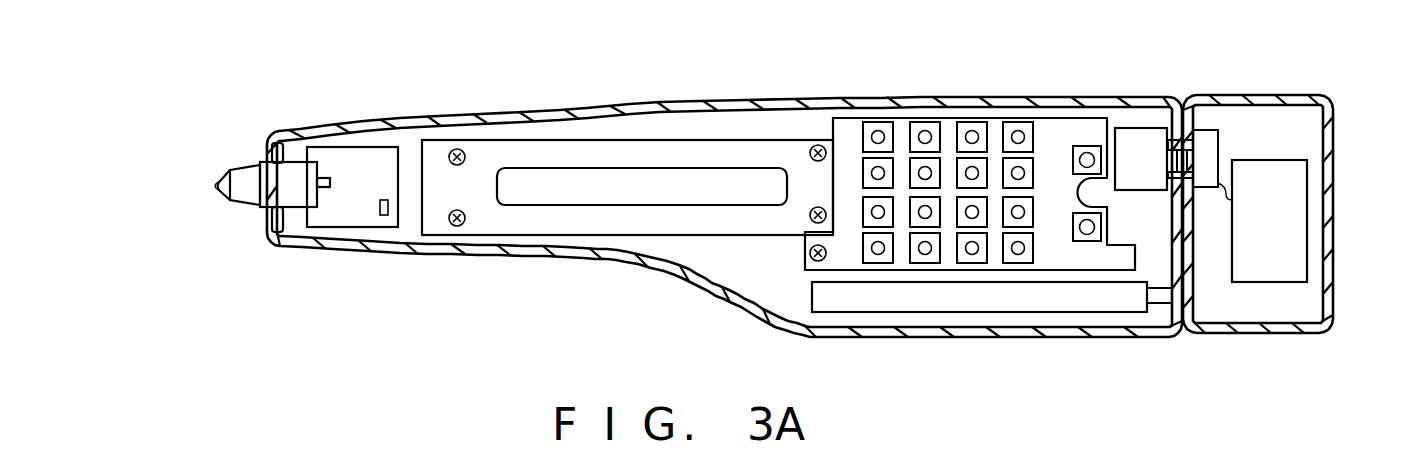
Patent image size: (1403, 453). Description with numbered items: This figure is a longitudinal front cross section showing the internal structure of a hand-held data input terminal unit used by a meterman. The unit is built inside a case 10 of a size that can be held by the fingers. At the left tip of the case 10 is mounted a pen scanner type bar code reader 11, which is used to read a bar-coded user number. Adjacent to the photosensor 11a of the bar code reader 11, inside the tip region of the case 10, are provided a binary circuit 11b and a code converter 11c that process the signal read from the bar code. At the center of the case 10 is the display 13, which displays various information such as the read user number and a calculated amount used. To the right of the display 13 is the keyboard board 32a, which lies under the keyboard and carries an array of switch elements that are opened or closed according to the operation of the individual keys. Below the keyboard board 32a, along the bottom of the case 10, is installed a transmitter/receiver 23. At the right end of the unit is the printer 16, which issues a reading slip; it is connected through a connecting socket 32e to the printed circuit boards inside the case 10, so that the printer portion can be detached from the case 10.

The case 10 is at (796, 98).
The pen scanner type bar code reader 11 is at (236, 215).
The photosensor 11a is at (212, 186).
The binary circuit 11b is at (362, 228).
The code converter 11c is at (343, 215).
The display 13 is at (582, 195).
The keyboard board 32a is at (1062, 124).
The connecting socket 32e is at (1150, 135).
The printer 16 is at (1290, 213).
The transmitter/receiver 23 is at (928, 297).